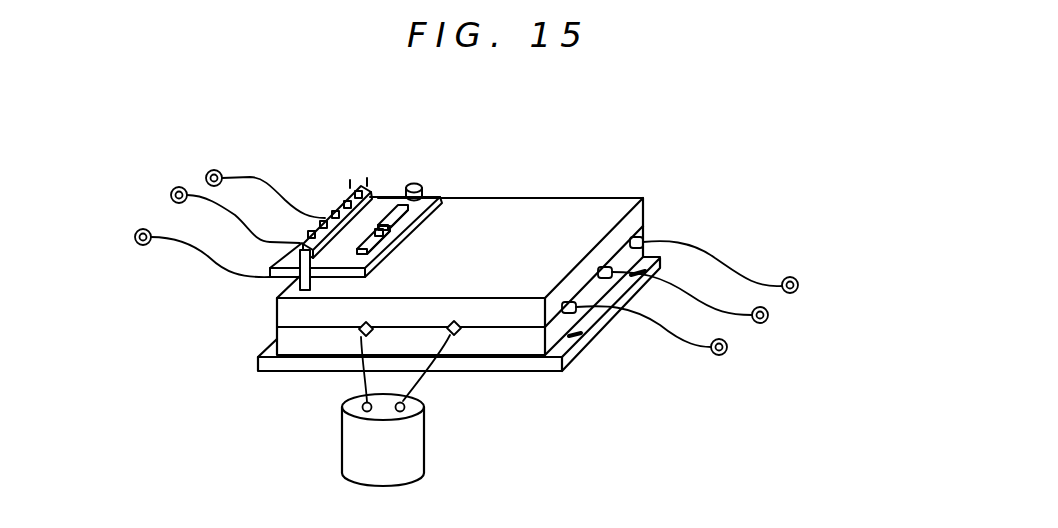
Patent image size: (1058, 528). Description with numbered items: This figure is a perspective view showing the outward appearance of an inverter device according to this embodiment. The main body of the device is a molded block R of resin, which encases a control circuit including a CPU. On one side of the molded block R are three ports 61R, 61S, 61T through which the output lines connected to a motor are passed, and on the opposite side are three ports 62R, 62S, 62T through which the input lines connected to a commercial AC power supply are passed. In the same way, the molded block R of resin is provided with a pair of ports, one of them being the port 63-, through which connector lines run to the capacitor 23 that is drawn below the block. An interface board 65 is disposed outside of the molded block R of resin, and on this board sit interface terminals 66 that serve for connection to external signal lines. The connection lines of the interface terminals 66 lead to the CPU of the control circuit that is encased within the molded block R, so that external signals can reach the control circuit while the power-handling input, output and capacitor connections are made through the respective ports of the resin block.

The molded block of resin R is at (538, 198).
The interface terminals 66 is at (353, 185).
The interface board 65 is at (394, 190).
The port 62S is at (172, 191).
The port 62T is at (254, 177).
The port 62R is at (143, 246).
The port 61T is at (798, 284).
The port 61S is at (768, 320).
The port 61R is at (725, 354).
The port 63- is at (463, 333).
The capacitor 23 is at (427, 445).